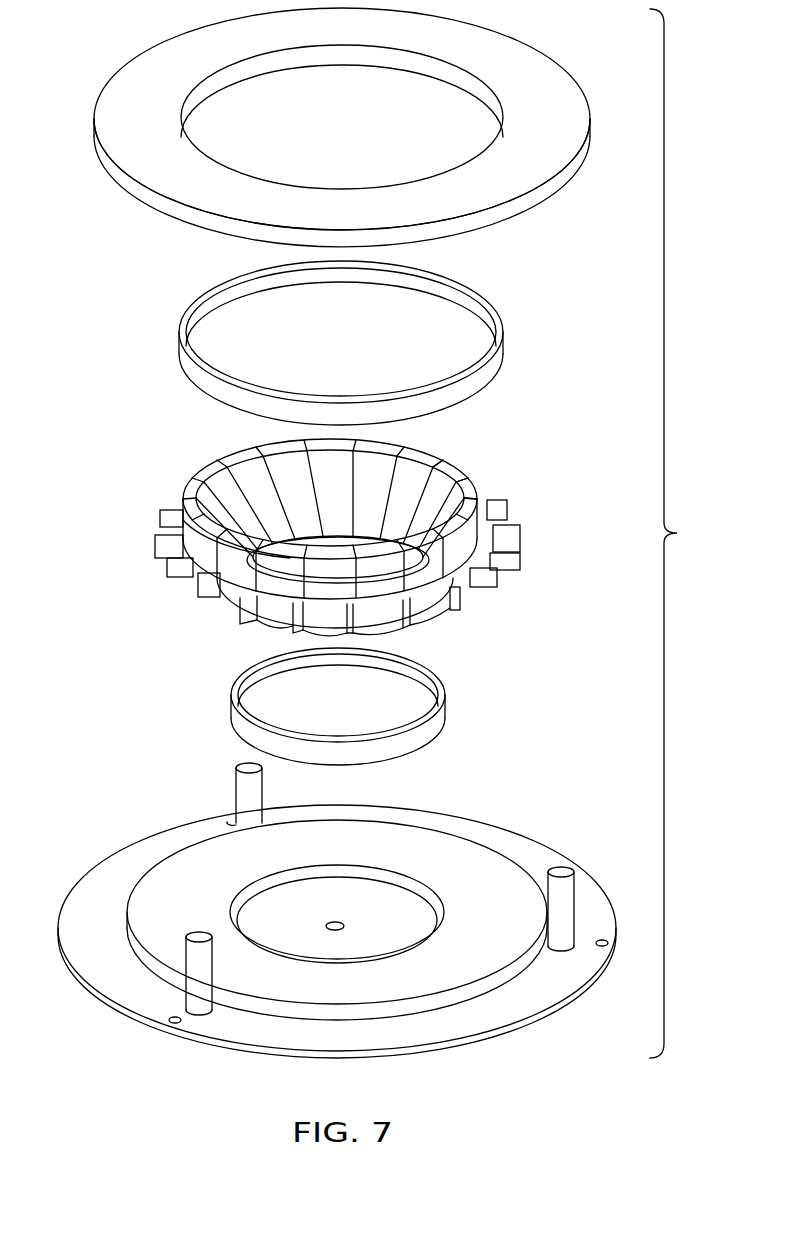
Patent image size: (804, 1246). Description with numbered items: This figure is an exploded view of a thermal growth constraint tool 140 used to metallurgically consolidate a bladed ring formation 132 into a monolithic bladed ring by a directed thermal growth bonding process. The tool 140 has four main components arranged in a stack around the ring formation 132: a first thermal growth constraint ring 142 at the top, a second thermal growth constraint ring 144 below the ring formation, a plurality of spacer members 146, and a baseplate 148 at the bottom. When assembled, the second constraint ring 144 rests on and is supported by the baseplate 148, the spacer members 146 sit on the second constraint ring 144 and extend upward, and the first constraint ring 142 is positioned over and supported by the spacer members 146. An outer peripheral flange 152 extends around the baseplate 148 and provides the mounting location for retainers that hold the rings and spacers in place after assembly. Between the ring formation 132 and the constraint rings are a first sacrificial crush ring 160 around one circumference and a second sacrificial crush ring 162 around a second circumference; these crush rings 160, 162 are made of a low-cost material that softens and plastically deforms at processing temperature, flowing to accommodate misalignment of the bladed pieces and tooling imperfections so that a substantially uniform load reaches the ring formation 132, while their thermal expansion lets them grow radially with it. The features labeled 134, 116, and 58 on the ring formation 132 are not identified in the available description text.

The thermal growth constraint tool 140 is at (685, 533).
The first thermal growth constraint ring 142 is at (176, 64).
The first sacrificial crush ring 160 is at (178, 350).
The ring formation 132 is at (314, 529).
The flange 134 is at (208, 556).
The rim segment 116 is at (455, 472).
The tab 58 is at (513, 566).
The second sacrificial crush ring 162 is at (232, 712).
The baseplate 148 is at (333, 910).
The second thermal growth constraint ring 144 is at (177, 866).
The spacer members 146 is at (240, 794).
The outer peripheral flange 152 is at (78, 903).